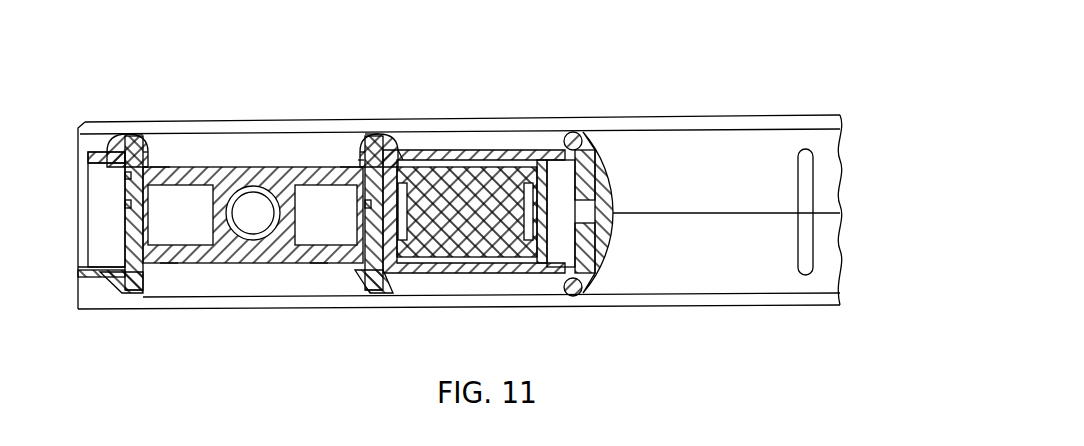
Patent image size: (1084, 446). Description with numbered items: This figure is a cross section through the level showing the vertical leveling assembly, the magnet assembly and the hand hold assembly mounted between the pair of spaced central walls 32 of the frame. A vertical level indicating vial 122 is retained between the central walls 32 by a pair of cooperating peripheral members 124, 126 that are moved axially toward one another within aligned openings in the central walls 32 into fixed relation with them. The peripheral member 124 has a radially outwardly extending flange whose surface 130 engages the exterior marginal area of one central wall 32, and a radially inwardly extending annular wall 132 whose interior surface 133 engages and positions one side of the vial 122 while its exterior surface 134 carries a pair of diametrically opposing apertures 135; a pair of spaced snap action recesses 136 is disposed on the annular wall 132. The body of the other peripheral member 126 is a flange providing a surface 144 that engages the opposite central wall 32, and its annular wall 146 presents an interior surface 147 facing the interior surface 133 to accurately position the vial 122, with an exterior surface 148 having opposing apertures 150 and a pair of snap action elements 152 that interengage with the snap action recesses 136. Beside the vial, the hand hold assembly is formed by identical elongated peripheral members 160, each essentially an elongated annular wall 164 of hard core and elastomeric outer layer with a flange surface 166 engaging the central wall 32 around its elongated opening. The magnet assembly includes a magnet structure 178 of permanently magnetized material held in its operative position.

The central wall 32 is at (488, 150).
The vertical level indicating vial 122 is at (234, 160).
The peripheral member 124 is at (408, 294).
The peripheral member 126 is at (102, 130).
The surface 130 is at (107, 276).
The annular wall 132 is at (130, 233).
The interior surface 133 is at (176, 264).
The exterior surface 134 is at (144, 270).
The aperture 135 is at (157, 272).
The snap action recess 136 is at (123, 207).
The surface 144 is at (124, 134).
The annular wall 146 is at (147, 165).
The interior surface 147 is at (160, 168).
The exterior surface 148 is at (143, 152).
The aperture 150 is at (139, 133).
The snap action element 152 is at (122, 186).
The peripheral member 160 is at (612, 150).
The annular wall 164 is at (590, 190).
The surface 166 is at (571, 131).
The magnet structure 178 is at (482, 268).